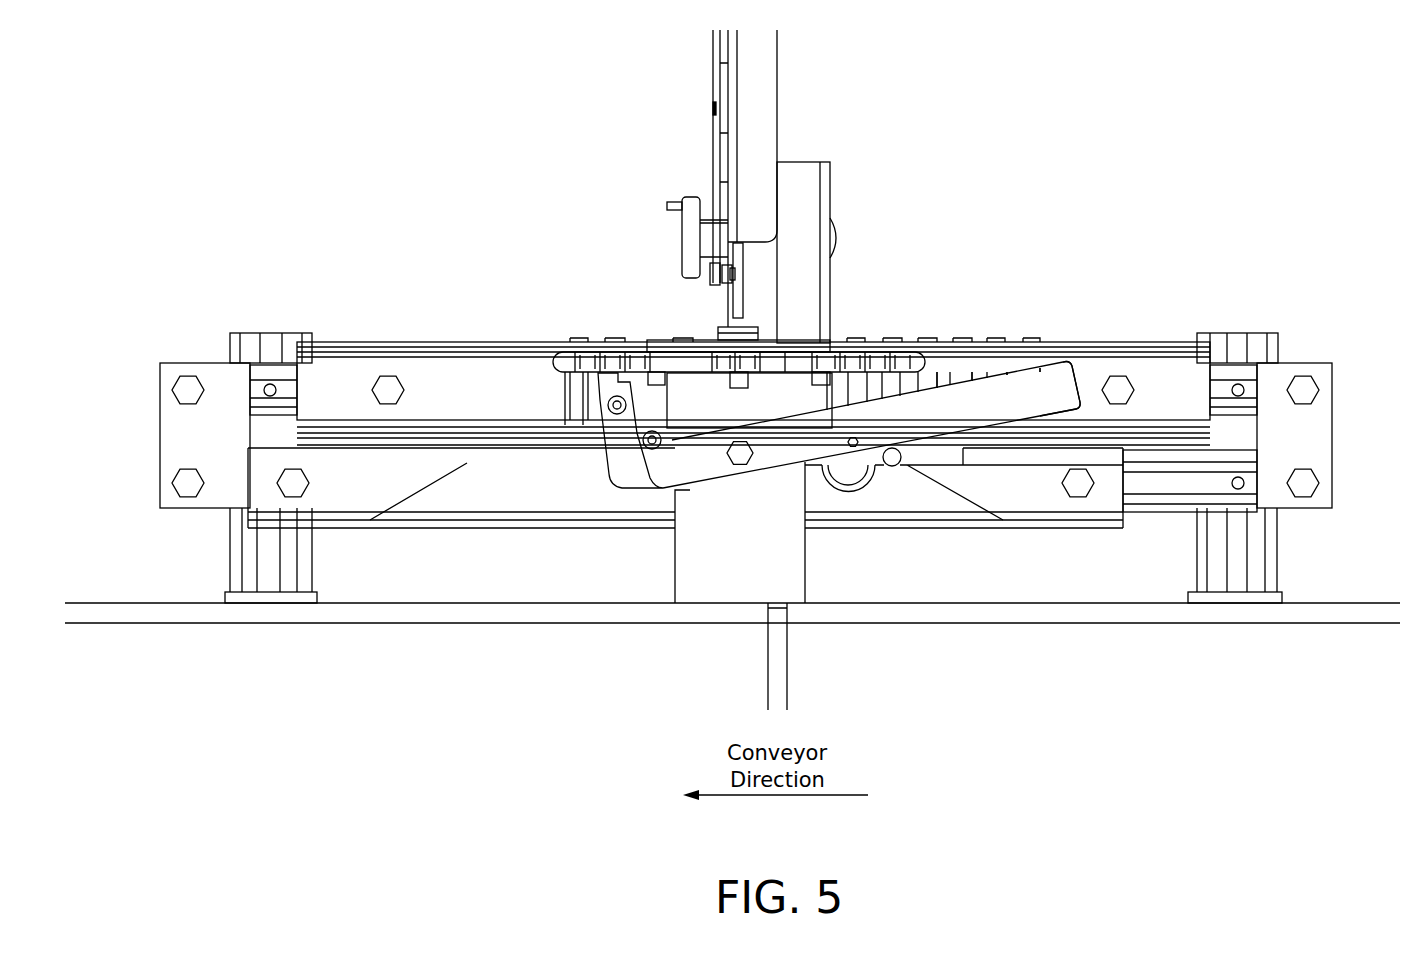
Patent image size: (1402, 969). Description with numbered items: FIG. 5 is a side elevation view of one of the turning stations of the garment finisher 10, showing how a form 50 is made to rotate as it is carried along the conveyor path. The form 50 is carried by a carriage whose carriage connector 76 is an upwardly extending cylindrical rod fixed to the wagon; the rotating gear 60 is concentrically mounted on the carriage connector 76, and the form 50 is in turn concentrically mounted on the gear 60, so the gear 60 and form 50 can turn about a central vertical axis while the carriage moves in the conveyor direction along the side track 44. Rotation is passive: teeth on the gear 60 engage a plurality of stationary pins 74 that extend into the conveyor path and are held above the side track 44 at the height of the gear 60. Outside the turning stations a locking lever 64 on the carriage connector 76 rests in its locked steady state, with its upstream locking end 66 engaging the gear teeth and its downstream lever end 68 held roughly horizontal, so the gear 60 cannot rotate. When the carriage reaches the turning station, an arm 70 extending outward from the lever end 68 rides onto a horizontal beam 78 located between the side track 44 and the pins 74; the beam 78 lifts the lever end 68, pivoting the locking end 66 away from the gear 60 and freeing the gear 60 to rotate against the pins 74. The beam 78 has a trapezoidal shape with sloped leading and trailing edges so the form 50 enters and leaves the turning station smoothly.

The garment finisher 10 is at (228, 202).
The upper side track 44 is at (483, 623).
The form 50 is at (780, 92).
The rotating gear 60 is at (872, 345).
The locking lever mechanism 64 is at (965, 413).
The upstream locking end 66 is at (623, 487).
The downstream lever end 68 is at (1080, 390).
The arm 70 is at (892, 466).
The stationary pin 74 is at (997, 338).
The carriage connector 76 is at (707, 580).
The horizontal beam 78 is at (512, 478).